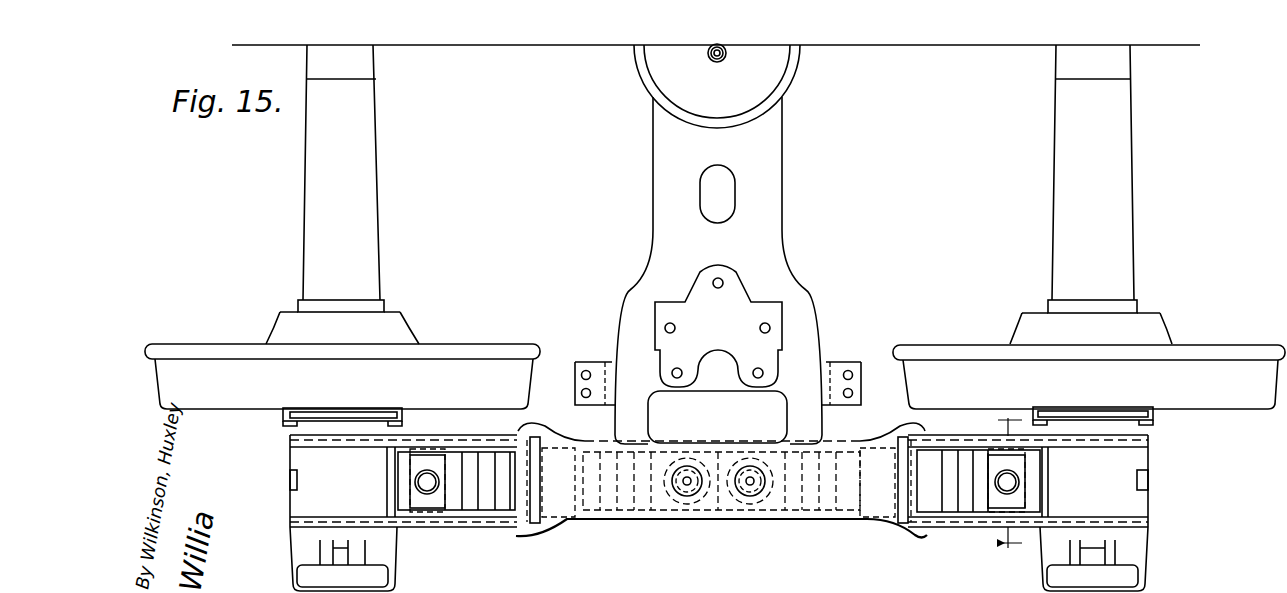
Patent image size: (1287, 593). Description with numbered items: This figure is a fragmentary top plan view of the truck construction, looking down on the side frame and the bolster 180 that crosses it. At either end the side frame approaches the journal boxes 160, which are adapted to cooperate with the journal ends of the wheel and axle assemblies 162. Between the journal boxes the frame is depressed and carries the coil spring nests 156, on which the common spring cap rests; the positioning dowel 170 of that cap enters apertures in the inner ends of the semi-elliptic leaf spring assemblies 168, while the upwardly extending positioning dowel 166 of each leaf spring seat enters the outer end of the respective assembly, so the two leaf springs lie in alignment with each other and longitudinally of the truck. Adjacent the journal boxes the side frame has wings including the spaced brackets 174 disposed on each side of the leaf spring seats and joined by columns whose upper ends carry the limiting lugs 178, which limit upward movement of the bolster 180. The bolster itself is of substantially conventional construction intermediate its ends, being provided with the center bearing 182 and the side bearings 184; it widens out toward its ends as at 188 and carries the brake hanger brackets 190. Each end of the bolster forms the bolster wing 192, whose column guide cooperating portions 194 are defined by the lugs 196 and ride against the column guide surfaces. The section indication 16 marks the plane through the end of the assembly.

The section line 16 is at (1010, 476).
The coil spring nests 156 is at (693, 497).
The journal boxes 160 is at (1142, 540).
The wheel and axle assemblies 162 is at (222, 357).
The positioning dowel 166 is at (415, 481).
The semi-elliptic leaf spring assembly 168 is at (472, 465).
The positioning dowel 170 is at (745, 470).
The spaced brackets 174 is at (443, 527).
The limiting lugs 178 is at (760, 592).
The bolster 180 is at (767, 173).
The center bearing 182 is at (770, 71).
The side bearings 184 is at (741, 313).
The widened end portion of bolster 188 is at (806, 333).
The brake hanger brackets 190 is at (593, 363).
The bolster wing 192 is at (560, 530).
The column guide cooperating portions 194 is at (525, 505).
The lugs 196 is at (526, 531).